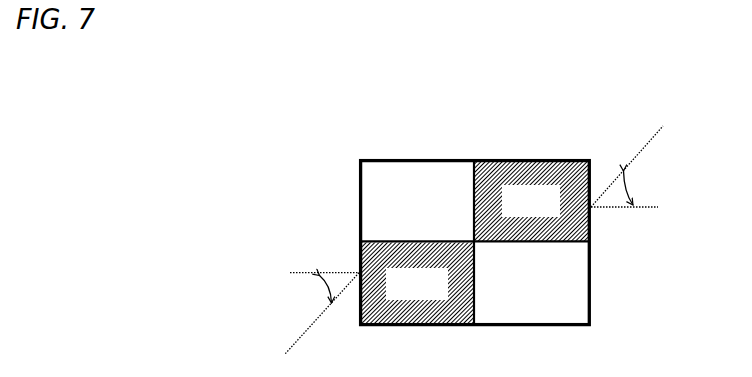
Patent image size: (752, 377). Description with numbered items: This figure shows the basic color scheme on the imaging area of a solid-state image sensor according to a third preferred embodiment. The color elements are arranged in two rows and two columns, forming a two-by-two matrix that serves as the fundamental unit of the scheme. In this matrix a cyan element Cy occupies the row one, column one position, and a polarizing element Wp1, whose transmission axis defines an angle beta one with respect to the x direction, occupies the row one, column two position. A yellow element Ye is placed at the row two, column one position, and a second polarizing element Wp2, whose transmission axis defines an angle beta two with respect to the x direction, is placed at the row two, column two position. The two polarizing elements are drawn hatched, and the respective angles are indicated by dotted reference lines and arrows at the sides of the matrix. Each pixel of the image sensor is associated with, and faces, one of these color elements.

The cyan element Cy is at (417, 202).
The polarizing element Wp1 is at (532, 202).
The polarizing element Wp2 is at (417, 283).
The yellow element Ye is at (532, 283).